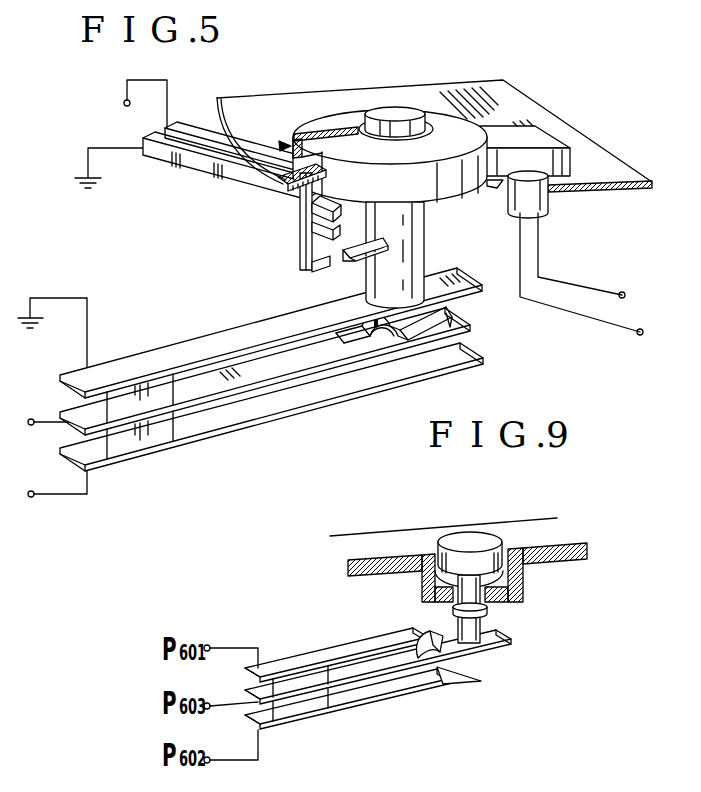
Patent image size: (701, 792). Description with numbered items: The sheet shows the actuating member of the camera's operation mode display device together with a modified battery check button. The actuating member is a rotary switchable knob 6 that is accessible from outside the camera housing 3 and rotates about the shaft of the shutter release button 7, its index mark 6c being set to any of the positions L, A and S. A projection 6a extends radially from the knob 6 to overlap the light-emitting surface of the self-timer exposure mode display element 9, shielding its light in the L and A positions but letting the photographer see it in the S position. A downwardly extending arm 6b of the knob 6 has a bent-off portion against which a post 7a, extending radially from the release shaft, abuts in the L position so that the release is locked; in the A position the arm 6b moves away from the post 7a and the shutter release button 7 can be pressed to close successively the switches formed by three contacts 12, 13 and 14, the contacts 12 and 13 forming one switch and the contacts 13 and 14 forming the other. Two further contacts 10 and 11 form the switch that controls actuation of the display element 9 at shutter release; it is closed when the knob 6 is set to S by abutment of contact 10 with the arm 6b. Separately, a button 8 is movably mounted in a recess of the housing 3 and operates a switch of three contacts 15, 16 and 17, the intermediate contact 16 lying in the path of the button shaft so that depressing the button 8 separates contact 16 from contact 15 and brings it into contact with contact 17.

In FIG. 5, the camera housing 3 is at (612, 165).
In FIG. 9, the camera housing 3 is at (541, 537).
In FIG. 5, the rotary switchable knob 6 is at (440, 124).
In FIG. 5, the projection 6a is at (548, 133).
In FIG. 5, the downwardly extending arm 6b is at (302, 246).
In FIG. 5, the index mark 6c is at (353, 135).
In FIG. 5, the shutter release button 7 is at (401, 113).
In FIG. 5, the post 7a is at (348, 257).
In FIG. 9, the battery check button 8 is at (470, 540).
In FIG. 5, the self-timer exposure mode display element 9 is at (531, 197).
In FIG. 5, the contact 10 is at (197, 168).
In FIG. 5, the contact 11 is at (207, 153).
In FIG. 5, the contact 12 is at (179, 356).
In FIG. 5, the contact 13 is at (254, 370).
In FIG. 5, the contact 14 is at (328, 388).
In FIG. 9, the contact 15 is at (345, 648).
In FIG. 9, the intermediate contact 16 is at (370, 674).
In FIG. 9, the contact 17 is at (423, 688).